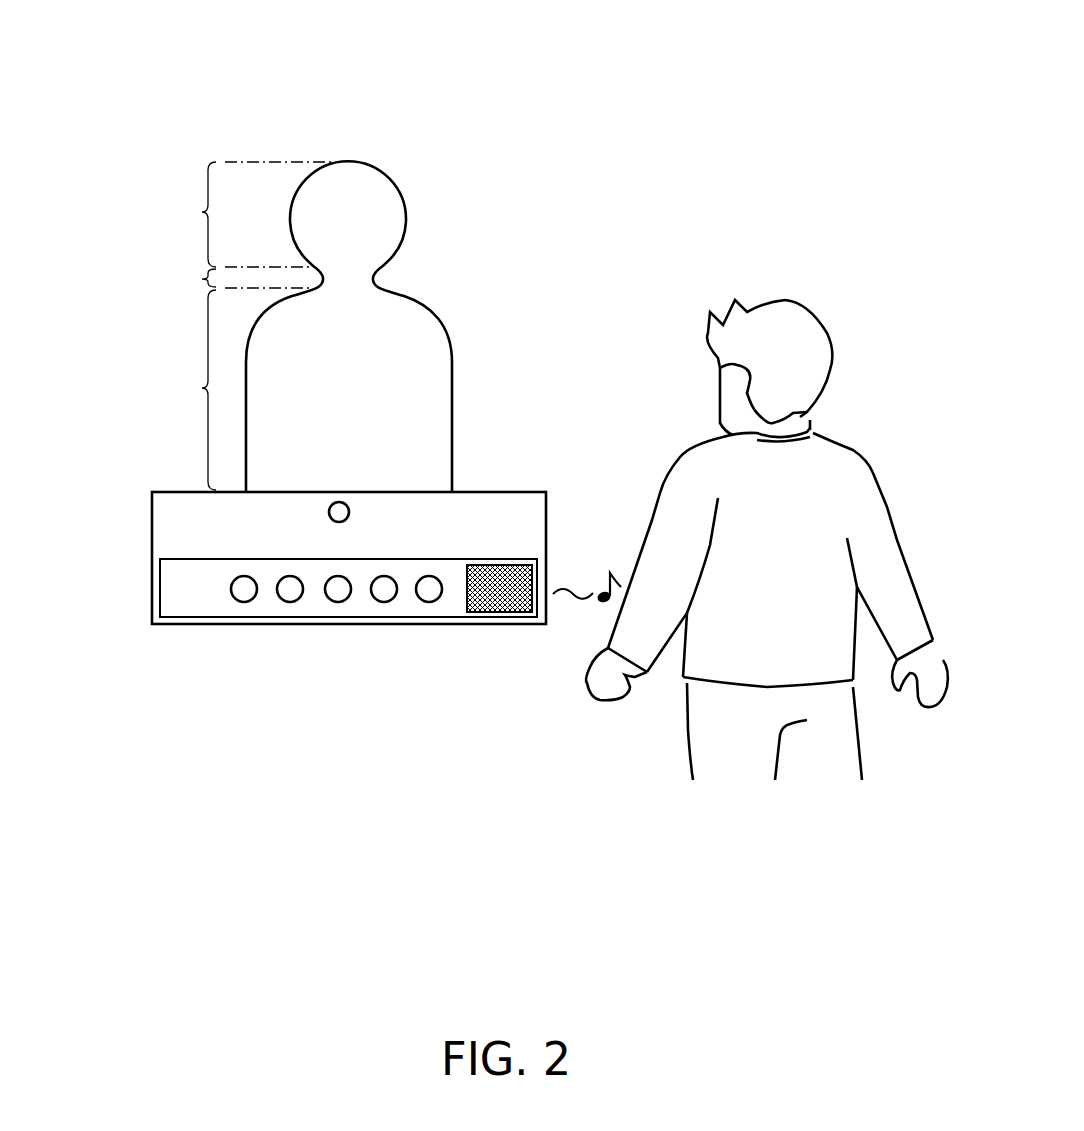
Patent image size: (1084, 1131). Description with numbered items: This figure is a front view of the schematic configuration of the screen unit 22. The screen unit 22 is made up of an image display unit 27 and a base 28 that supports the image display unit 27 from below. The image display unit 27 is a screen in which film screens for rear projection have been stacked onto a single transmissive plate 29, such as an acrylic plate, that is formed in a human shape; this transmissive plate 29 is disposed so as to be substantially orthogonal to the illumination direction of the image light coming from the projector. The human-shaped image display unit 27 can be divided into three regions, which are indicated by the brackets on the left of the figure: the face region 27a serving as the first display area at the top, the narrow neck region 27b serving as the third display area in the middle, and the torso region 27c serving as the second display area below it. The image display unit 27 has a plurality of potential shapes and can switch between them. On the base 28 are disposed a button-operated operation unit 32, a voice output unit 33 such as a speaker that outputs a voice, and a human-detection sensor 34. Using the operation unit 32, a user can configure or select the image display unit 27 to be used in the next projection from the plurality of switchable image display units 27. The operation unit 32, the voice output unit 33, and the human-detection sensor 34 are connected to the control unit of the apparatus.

The screen unit 22 is at (332, 45).
The image display unit 27 is at (516, 264).
The face region 27a is at (238, 214).
The neck region 27b is at (229, 279).
The torso region 27c is at (180, 390).
The base 28 is at (135, 606).
The transmissive plate 29 is at (395, 223).
The operation unit 32 is at (421, 598).
The voice output unit 33 is at (502, 611).
The human-detection sensor 34 is at (329, 513).